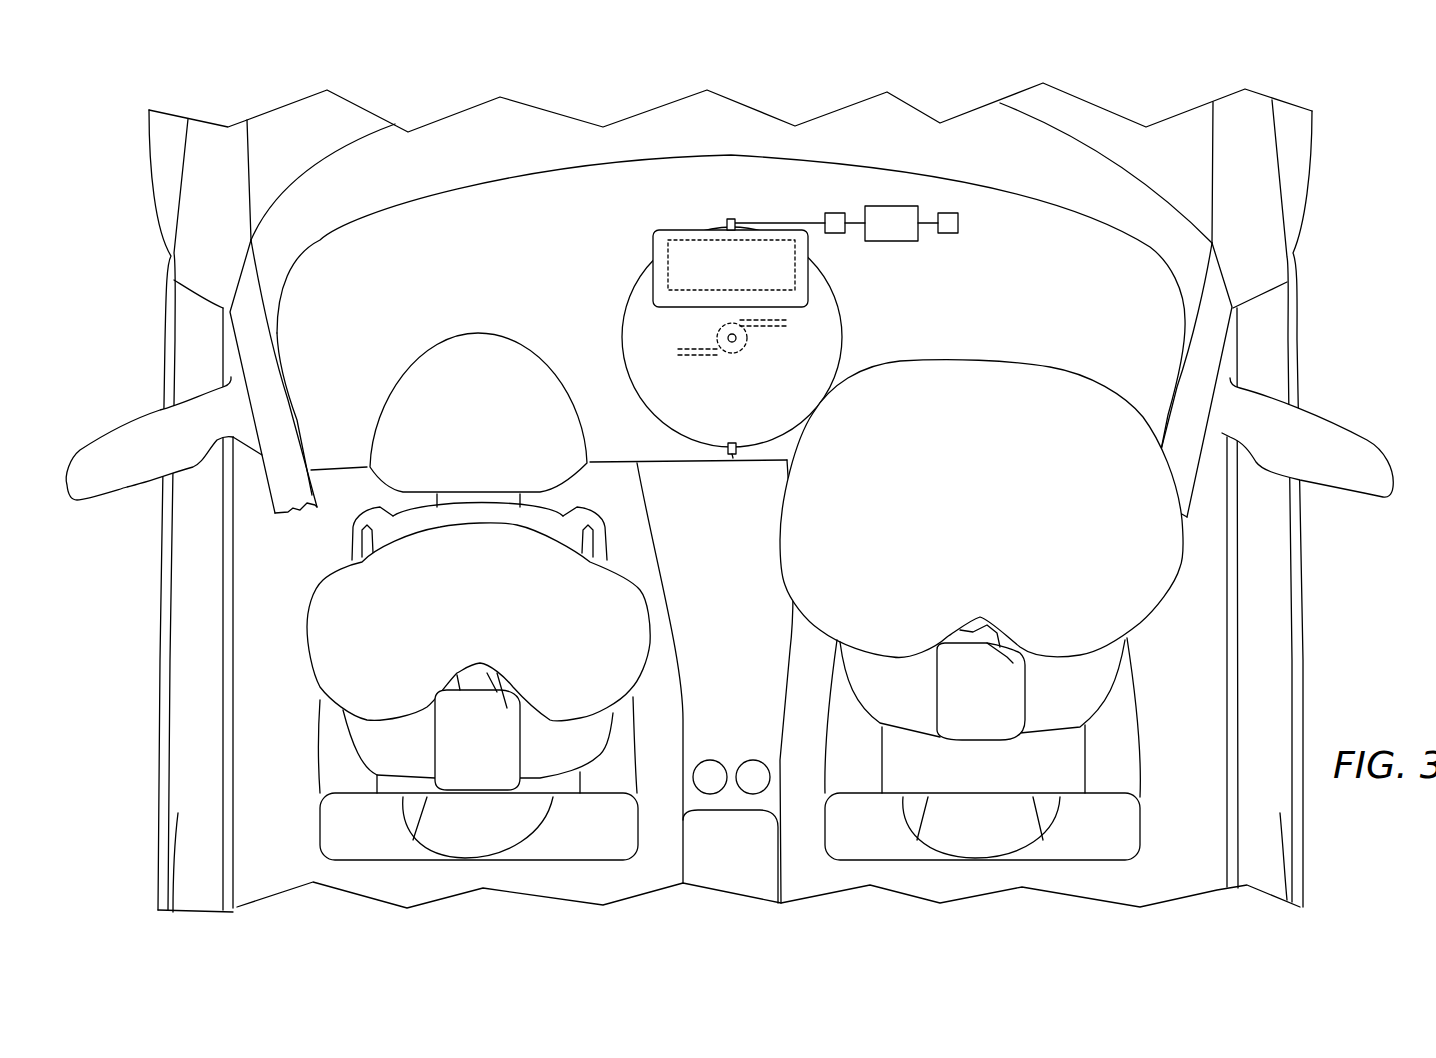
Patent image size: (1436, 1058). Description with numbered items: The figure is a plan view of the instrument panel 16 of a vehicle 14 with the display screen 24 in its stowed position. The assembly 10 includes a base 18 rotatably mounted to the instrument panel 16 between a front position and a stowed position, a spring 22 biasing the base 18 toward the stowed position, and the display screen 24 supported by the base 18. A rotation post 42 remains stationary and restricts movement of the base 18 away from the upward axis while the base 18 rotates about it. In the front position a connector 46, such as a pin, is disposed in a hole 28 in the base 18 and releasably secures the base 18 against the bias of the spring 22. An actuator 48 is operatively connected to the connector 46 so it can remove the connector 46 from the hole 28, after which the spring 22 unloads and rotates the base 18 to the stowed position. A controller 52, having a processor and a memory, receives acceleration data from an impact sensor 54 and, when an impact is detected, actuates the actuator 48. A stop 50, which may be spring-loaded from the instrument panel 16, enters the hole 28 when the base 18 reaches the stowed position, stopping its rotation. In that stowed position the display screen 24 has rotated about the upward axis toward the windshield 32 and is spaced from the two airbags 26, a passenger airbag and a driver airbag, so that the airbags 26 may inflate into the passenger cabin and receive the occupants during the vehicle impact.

The assembly 10 is at (609, 239).
The vehicle 14 is at (428, 103).
The instrument panel 16 is at (438, 217).
The base 18 is at (650, 376).
The spring 22 is at (715, 338).
The display screen 24 is at (678, 277).
The airbag 26 is at (1037, 387).
The hole 28 is at (728, 444).
The windshield 32 is at (357, 242).
The rotation post 42 is at (736, 342).
The connector 46 is at (730, 219).
The actuator 48 is at (842, 236).
The stop 50 is at (733, 458).
The controller 52 is at (910, 243).
The impact sensor 54 is at (953, 236).